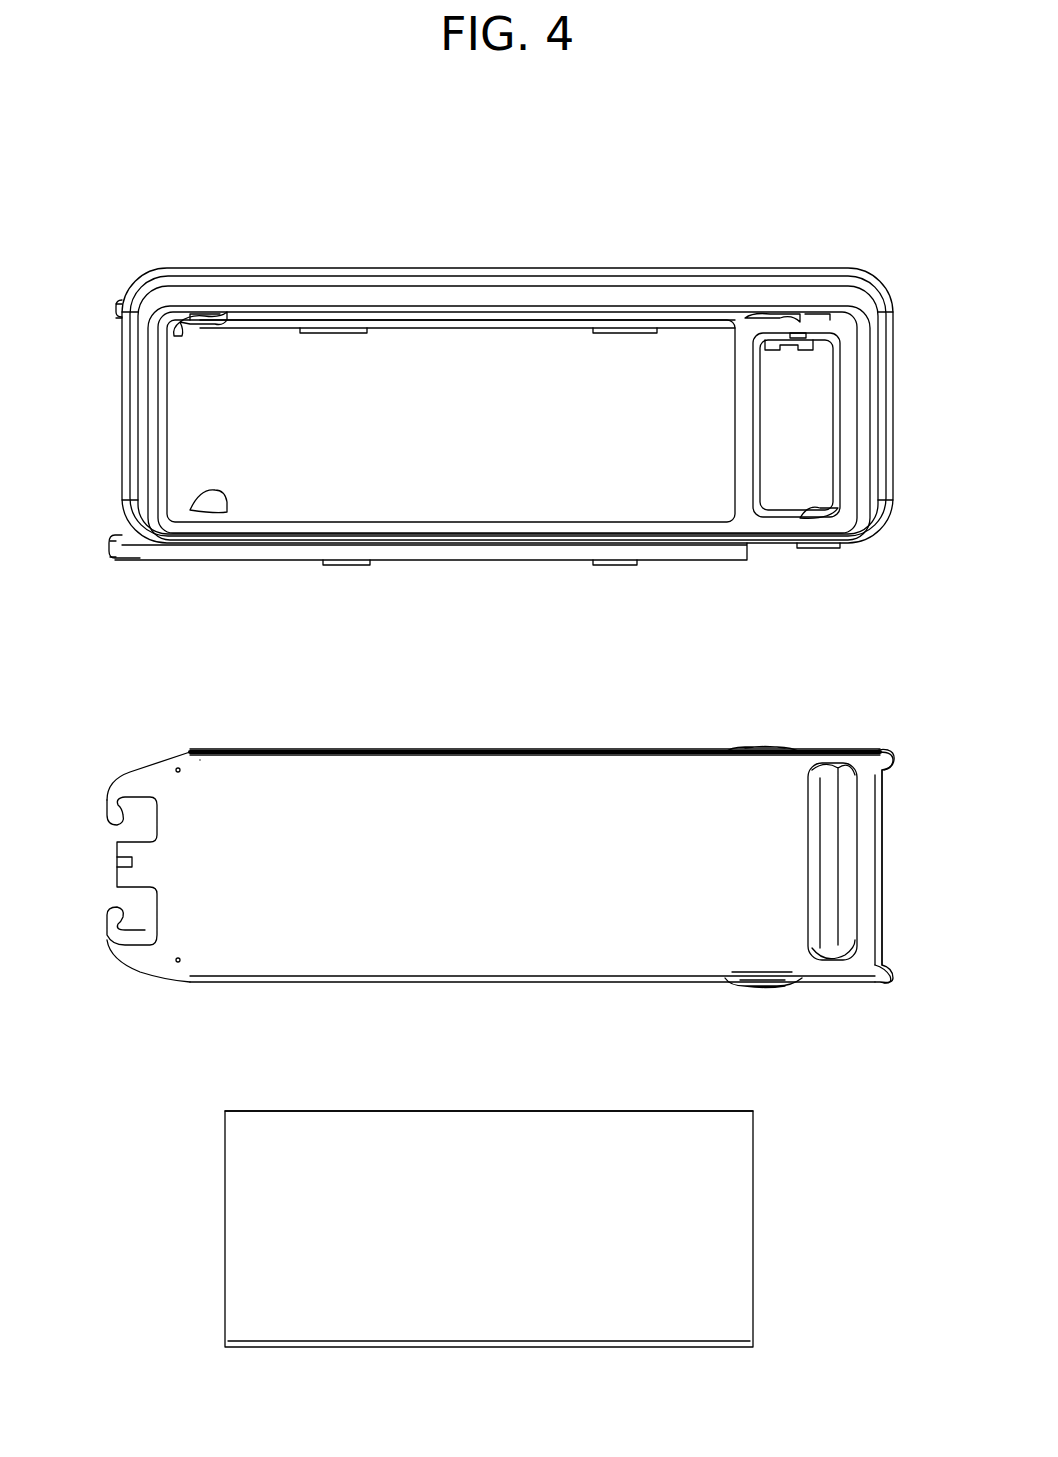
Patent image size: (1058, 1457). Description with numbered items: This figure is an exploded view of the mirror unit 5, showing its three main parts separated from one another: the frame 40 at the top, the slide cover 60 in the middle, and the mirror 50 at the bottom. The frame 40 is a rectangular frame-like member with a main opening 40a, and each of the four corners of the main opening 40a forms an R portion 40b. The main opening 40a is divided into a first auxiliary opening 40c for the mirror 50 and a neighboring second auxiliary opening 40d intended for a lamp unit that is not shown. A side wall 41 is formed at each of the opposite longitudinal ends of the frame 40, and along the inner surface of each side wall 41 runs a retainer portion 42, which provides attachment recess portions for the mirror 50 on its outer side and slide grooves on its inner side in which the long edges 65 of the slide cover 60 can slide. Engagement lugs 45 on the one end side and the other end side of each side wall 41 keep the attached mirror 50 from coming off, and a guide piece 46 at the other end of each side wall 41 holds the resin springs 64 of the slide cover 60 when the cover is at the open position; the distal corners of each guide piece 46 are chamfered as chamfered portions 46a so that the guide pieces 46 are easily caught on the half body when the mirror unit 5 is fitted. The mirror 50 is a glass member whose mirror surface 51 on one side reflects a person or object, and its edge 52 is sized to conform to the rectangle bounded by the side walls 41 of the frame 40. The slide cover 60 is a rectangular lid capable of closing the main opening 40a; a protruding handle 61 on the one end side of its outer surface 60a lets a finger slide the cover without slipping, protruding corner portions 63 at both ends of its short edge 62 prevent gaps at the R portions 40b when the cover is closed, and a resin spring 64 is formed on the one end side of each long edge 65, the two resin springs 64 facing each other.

The mirror unit 5 is at (675, 188).
The frame 40 is at (490, 248).
The main opening 40a is at (775, 636).
The R portion 40b is at (206, 310).
The first auxiliary opening 40c is at (663, 459).
The second auxiliary opening 40d is at (797, 463).
The side wall 41 is at (483, 548).
The retainer portion 42 is at (490, 320).
The engagement lug 45 is at (340, 334).
The guide piece 46 is at (122, 313).
The chamfered portion 46a is at (122, 303).
The mirror 50 is at (618, 1100).
The mirror surface 51 is at (380, 1145).
The panel edge 52 is at (322, 1111).
The slide cover 60 is at (522, 740).
The outer surface 60a is at (642, 780).
The handle 61 is at (848, 882).
The short edge 62 is at (125, 822).
The protruding corner portion 63 is at (894, 755).
The resin spring 64 is at (768, 746).
The long edge 65 is at (396, 746).